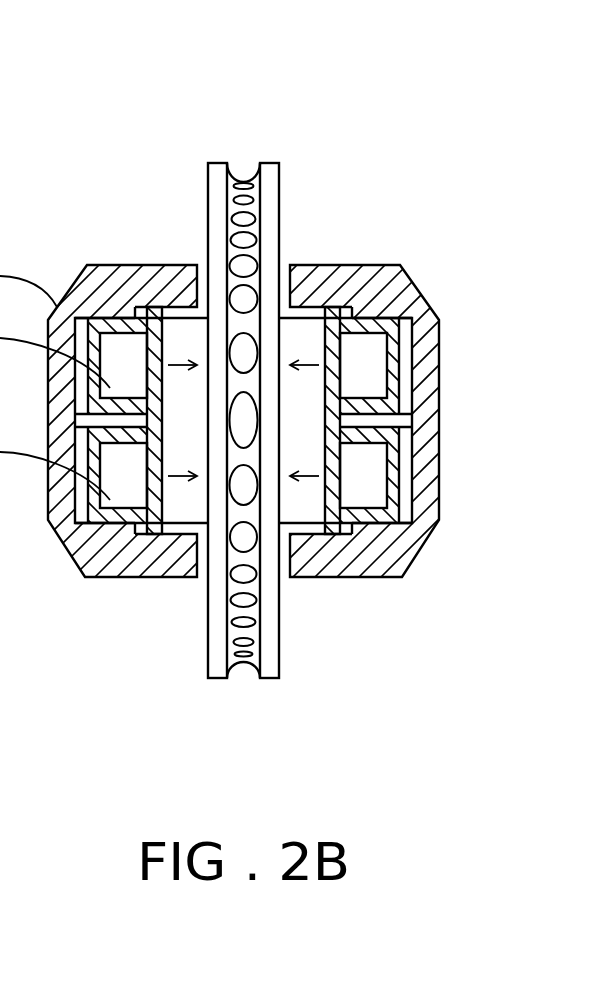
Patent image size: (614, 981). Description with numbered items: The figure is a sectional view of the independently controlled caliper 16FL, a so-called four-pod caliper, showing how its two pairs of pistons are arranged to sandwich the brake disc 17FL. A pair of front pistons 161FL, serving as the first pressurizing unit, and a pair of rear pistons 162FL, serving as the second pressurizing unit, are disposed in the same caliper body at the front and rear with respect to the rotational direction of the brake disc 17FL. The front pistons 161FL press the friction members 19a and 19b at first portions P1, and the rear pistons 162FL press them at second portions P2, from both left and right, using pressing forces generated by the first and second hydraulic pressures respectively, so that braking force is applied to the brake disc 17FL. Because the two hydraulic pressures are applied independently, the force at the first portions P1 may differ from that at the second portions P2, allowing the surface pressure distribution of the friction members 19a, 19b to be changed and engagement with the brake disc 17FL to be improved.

The brake disc 17FL is at (281, 190).
The independently controlled caliper 16FL is at (368, 318).
The rear pistons 162FL is at (358, 373).
The front pistons 161FL is at (362, 490).
The friction member 19a is at (205, 480).
The friction member 19b is at (282, 480).
The second portions P2 is at (205, 363).
The first portions P1 is at (170, 532).